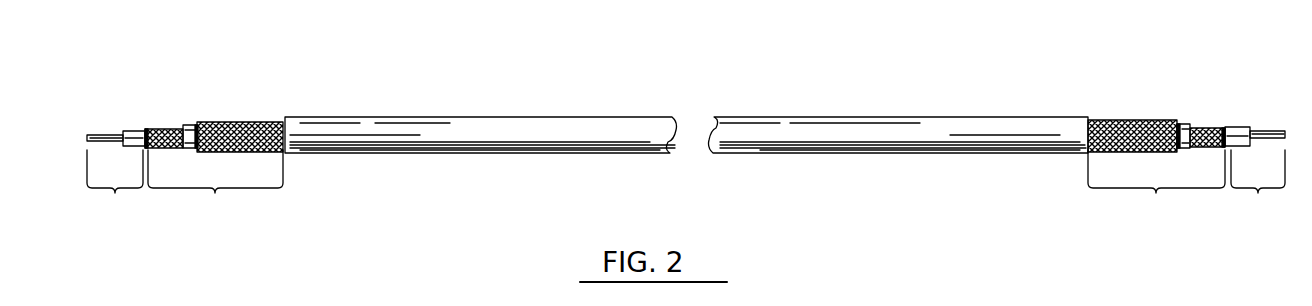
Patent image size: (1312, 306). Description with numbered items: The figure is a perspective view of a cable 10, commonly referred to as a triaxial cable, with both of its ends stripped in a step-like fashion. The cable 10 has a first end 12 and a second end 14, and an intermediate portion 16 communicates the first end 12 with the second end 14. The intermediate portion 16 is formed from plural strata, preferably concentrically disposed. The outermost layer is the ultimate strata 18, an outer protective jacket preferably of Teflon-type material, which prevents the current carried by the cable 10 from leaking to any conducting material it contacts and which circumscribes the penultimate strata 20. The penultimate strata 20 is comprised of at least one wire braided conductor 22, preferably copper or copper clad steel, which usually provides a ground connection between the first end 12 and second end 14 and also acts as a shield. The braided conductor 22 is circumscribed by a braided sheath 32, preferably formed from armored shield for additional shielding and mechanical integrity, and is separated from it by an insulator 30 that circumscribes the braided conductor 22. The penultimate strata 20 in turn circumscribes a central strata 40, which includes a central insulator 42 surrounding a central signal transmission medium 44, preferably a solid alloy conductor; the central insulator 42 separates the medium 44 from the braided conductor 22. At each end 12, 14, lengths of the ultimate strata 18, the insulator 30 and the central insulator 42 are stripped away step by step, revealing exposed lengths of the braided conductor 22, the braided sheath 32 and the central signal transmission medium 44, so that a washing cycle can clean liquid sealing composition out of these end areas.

The cable 10 is at (669, 157).
The first end 12 is at (669, 174).
The second end 14 is at (1205, 202).
The intermediate portion 16 is at (632, 163).
The ultimate strata 18 is at (340, 153).
The penultimate strata 20 is at (685, 145).
The wire braided conductor 22 is at (147, 129).
The insulator 30 is at (190, 125).
The braided sheath 32 is at (260, 120).
The central strata 40 is at (669, 146).
The central insulator 42 is at (135, 131).
The central signal transmission medium 44 is at (110, 133).